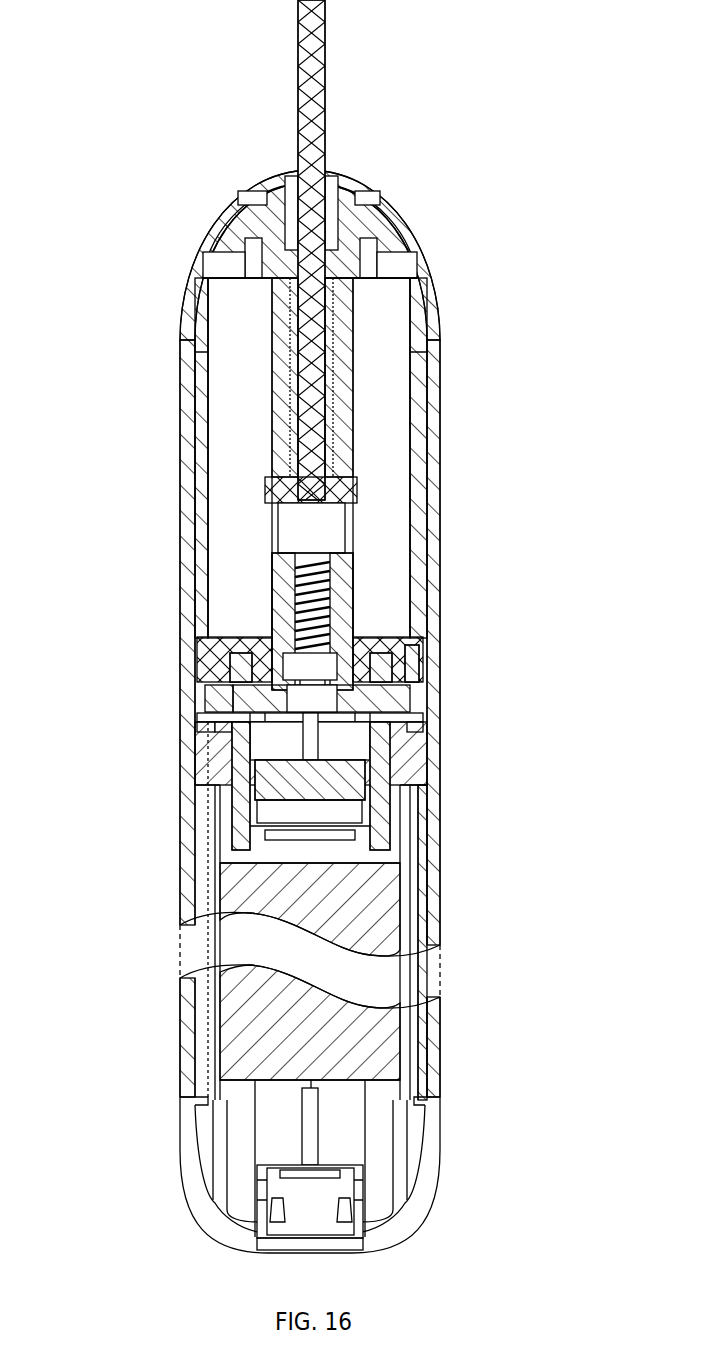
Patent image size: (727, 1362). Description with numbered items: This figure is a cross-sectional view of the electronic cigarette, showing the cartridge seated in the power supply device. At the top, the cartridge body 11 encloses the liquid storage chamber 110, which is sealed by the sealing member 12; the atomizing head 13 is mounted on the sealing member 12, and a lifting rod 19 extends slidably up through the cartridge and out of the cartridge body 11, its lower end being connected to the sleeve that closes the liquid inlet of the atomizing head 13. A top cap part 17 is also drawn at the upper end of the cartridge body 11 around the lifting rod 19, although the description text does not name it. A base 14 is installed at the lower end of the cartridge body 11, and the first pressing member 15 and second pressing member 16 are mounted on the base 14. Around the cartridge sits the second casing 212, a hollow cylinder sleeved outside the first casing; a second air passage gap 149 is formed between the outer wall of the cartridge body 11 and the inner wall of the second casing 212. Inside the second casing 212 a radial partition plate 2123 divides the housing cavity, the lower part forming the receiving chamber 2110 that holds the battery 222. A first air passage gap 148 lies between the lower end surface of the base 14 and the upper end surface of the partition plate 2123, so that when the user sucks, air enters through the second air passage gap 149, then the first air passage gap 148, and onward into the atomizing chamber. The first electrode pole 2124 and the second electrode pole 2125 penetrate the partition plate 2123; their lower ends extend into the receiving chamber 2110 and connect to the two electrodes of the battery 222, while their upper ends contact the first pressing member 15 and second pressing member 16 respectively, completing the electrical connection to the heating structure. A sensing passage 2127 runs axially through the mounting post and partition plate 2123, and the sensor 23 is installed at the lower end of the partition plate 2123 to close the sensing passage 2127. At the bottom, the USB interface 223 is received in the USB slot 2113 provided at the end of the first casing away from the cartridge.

The lifting rod 19 is at (318, 82).
The top cap 17 is at (355, 220).
The cartridge body 11 is at (415, 450).
The second air passage gap 149 is at (427, 512).
The liquid storage chamber 110 is at (387, 553).
The second casing 212 is at (433, 597).
The second pressing member 16 is at (418, 658).
The first air passage gap 148 is at (425, 712).
The partition plate 2123 is at (355, 746).
The second electrode pole 2125 is at (350, 786).
The atomizing head 13 is at (258, 605).
The sealing member 12 is at (240, 642).
The first pressing member 15 is at (225, 690).
The base 14 is at (227, 717).
The sensing passage 2127 is at (242, 716).
The first electrode pole 2124 is at (240, 770).
The sensor 23 is at (245, 828).
The receiving chamber 2110 is at (412, 892).
The battery 222 is at (355, 1032).
The USB interface 223 is at (330, 1194).
The USB slot 2113 is at (320, 1248).